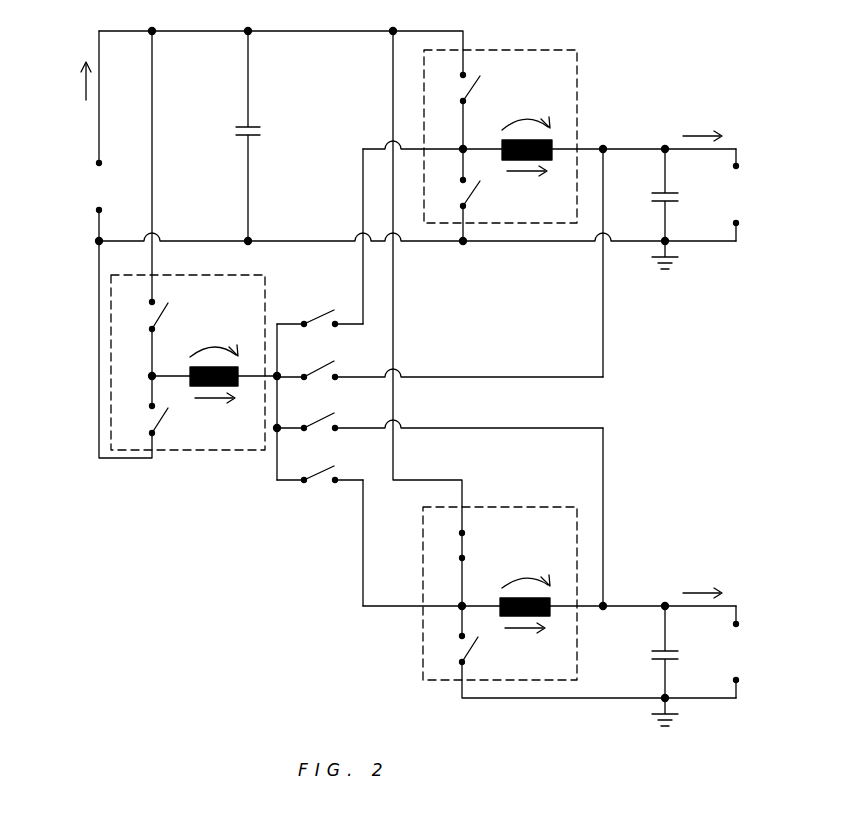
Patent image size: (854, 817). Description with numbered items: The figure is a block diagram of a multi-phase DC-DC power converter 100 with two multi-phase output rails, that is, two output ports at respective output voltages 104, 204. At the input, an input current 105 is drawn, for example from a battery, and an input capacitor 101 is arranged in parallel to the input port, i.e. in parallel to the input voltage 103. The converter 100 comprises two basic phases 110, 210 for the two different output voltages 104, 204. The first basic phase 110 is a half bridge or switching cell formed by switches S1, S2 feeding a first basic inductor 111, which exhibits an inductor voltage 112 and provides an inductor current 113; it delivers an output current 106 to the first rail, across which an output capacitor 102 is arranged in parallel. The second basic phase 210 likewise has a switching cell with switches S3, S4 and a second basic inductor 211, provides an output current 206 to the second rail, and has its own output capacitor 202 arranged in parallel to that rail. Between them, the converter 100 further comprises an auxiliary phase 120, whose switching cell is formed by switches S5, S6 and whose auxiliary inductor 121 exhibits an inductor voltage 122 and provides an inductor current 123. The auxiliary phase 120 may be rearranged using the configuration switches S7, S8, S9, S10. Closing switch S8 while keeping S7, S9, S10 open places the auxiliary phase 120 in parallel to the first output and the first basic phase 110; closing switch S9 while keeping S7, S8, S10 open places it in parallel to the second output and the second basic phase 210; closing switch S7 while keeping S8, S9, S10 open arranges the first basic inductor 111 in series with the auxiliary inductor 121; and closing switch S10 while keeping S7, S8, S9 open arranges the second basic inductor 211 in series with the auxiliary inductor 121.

The multi-phase power converter 100 is at (635, 390).
The input capacitor 101 is at (236, 131).
The output capacitor 102 is at (648, 195).
The input voltage 103 is at (80, 165).
The output voltage 104 is at (766, 207).
The input current 105 is at (84, 78).
The output current 106 is at (703, 133).
The basic phase 110 is at (578, 60).
The basic inductor 111 is at (502, 140).
The inductor voltage 112 is at (540, 118).
The inductor current 113 is at (525, 175).
The auxiliary phase 120 is at (228, 277).
The auxiliary inductor 121 is at (190, 367).
The inductor voltage 122 is at (230, 346).
The inductor current 123 is at (215, 401).
The output capacitor 202 is at (648, 652).
The output voltage 204 is at (766, 665).
The output current 206 is at (701, 590).
The basic phase 210 is at (540, 506).
The basic inductor 211 is at (502, 598).
The switch S1 is at (457, 88).
The switch S2 is at (456, 193).
The switch S3 is at (450, 546).
The switch S4 is at (454, 649).
The switch S5 is at (145, 338).
The switch S6 is at (144, 406).
The configuration switch S7 is at (320, 314).
The configuration switch S8 is at (440, 367).
The configuration switch S9 is at (440, 418).
The configuration switch S10 is at (320, 470).